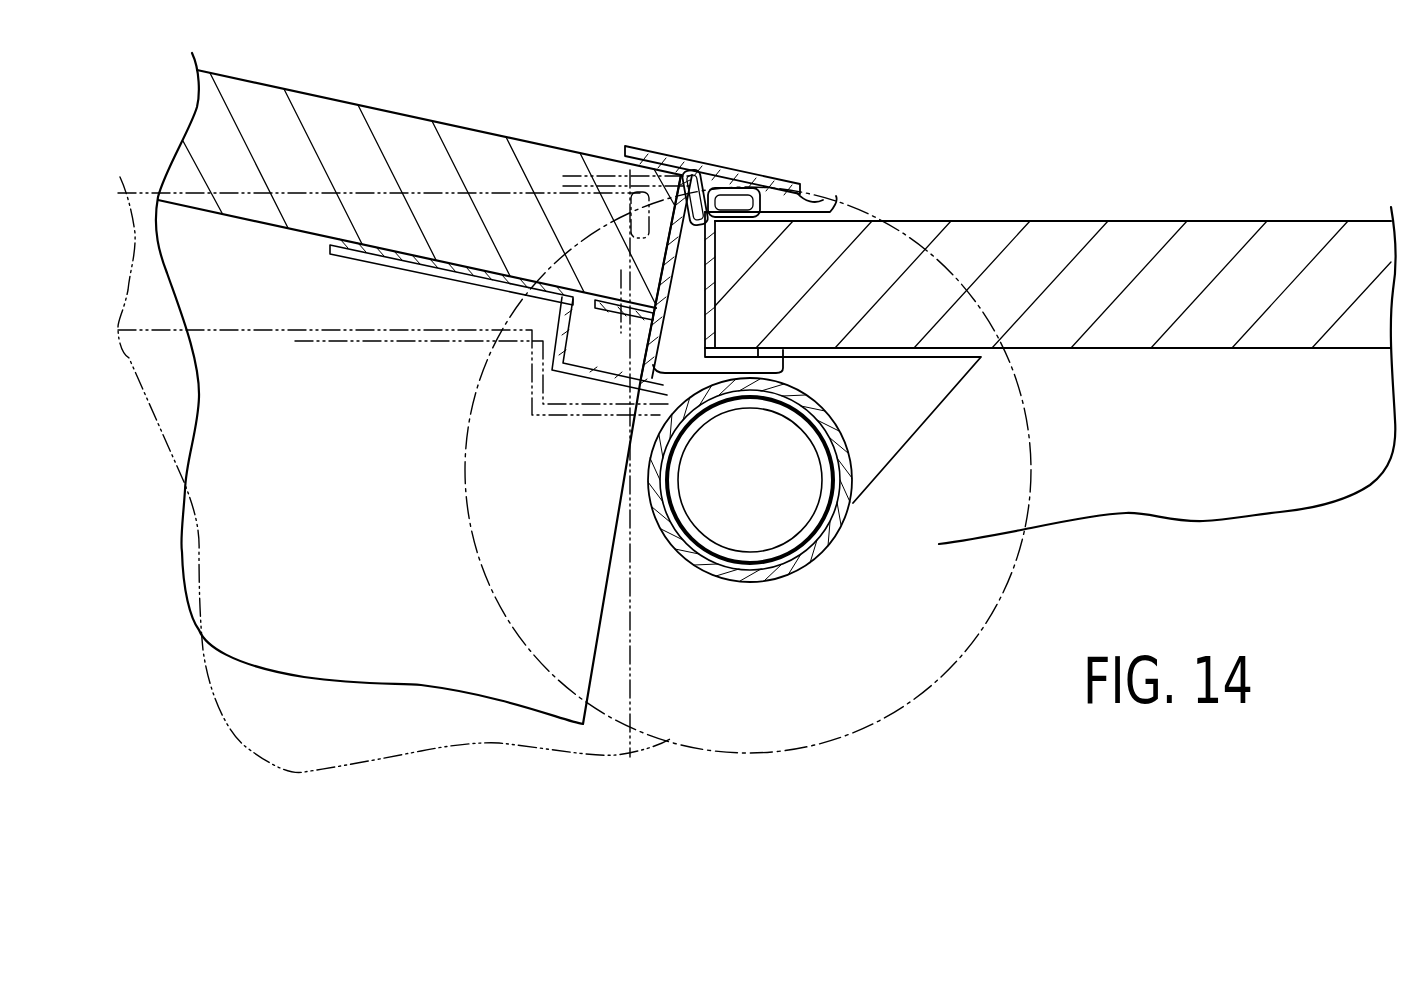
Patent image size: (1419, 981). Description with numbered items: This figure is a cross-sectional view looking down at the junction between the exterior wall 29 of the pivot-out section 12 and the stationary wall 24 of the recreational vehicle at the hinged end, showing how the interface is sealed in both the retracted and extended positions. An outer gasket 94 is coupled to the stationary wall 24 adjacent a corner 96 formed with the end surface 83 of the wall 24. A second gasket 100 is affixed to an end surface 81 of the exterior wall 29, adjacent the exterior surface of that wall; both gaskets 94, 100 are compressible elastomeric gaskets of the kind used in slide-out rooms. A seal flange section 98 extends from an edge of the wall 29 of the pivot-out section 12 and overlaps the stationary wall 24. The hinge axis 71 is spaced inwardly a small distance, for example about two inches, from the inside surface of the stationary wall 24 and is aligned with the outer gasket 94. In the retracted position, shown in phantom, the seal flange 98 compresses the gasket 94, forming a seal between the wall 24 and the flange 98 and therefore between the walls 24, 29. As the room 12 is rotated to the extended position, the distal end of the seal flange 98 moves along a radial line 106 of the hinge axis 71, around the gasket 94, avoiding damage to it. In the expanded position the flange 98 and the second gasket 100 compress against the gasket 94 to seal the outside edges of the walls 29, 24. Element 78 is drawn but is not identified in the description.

The pivot-out section 12 is at (462, 128).
The stationary wall 24 is at (1132, 231).
The exterior wall 29 is at (520, 138).
The hinge axis 71 is at (750, 477).
The frame flange 78 is at (818, 200).
The end surface 81 is at (653, 317).
The end surface 83 is at (745, 266).
The outer gasket 94 is at (753, 190).
The corner 96 is at (937, 695).
The seal flange section 98 is at (787, 178).
The second gasket 100 is at (700, 168).
The radial line 106 is at (702, 226).